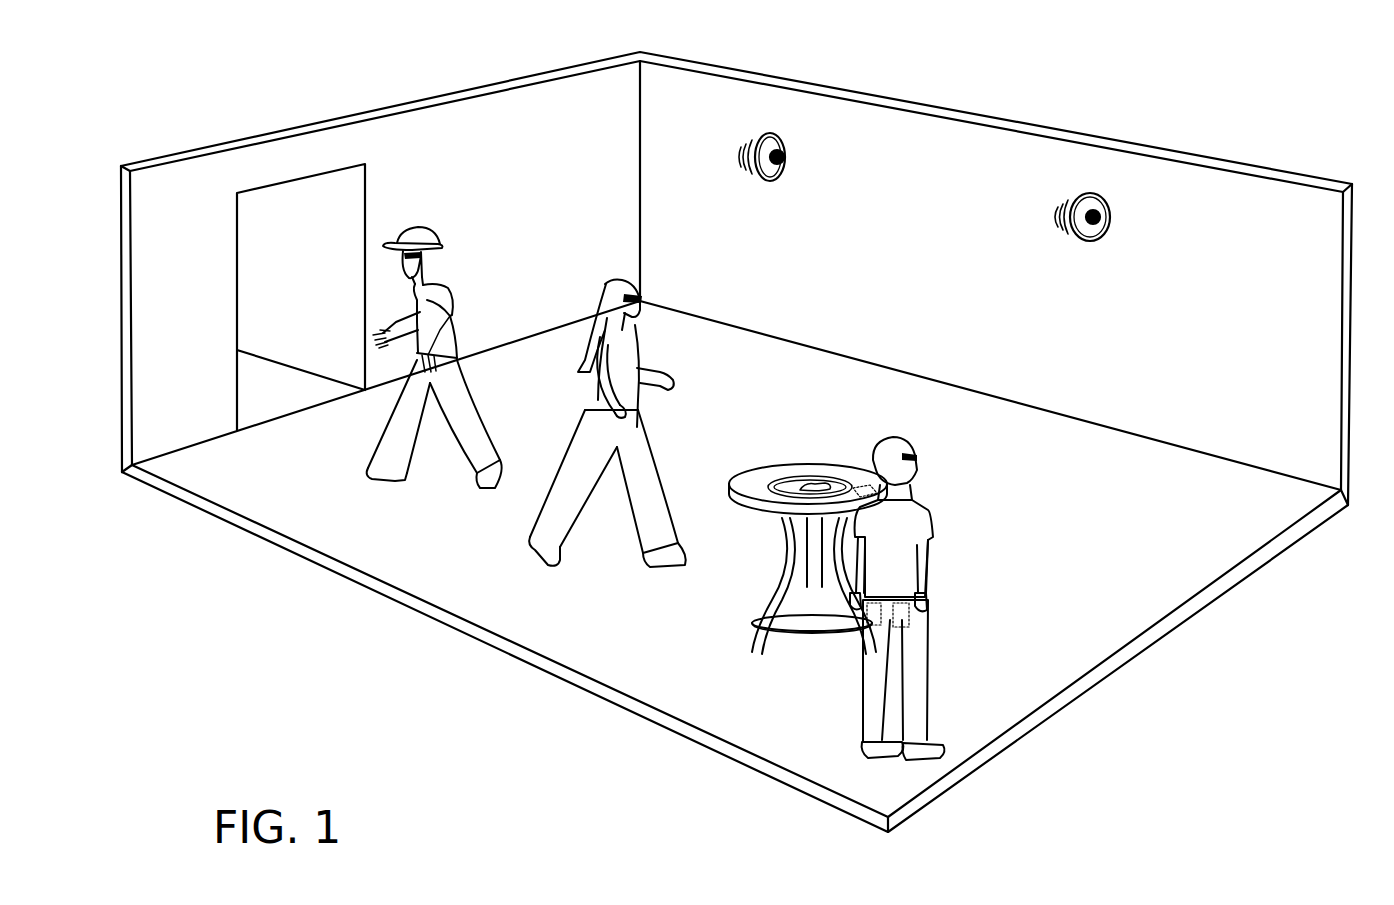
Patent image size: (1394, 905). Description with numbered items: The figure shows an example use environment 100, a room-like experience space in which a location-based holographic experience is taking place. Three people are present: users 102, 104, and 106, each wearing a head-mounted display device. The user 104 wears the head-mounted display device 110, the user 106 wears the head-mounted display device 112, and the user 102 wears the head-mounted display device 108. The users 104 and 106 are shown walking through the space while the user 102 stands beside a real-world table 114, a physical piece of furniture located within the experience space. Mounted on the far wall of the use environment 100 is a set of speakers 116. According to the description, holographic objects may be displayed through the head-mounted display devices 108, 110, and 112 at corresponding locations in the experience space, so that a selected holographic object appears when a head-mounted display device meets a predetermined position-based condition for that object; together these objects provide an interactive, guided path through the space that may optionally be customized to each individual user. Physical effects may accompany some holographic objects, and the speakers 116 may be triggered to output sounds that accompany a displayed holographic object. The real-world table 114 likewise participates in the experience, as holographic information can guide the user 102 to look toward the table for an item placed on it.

The use environment 100 is at (1276, 117).
The user 102 is at (922, 598).
The user 104 is at (440, 357).
The user 106 is at (607, 424).
The head-mounted display device 108 is at (915, 457).
The head-mounted display device 110 is at (442, 252).
The head-mounted display device 112 is at (615, 295).
The real-world table 114 is at (795, 465).
The speakers 116 is at (760, 137).